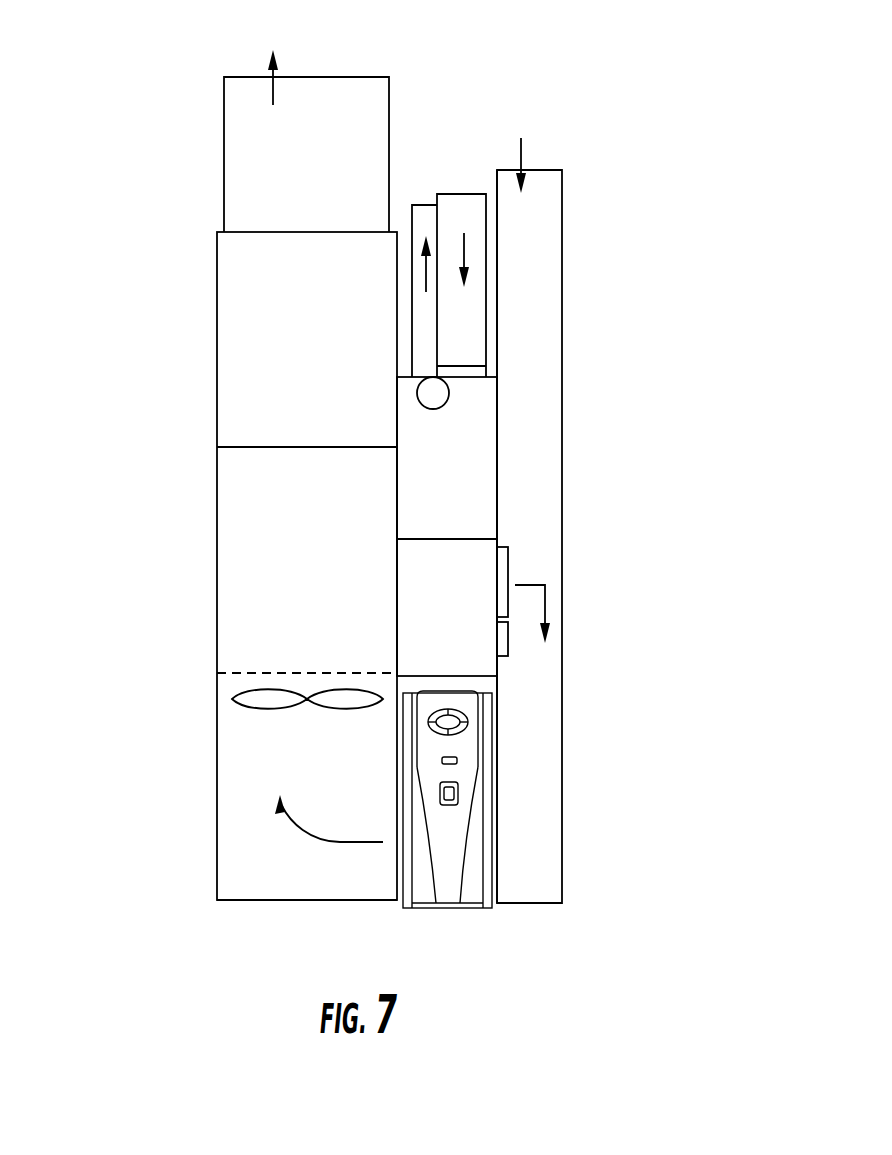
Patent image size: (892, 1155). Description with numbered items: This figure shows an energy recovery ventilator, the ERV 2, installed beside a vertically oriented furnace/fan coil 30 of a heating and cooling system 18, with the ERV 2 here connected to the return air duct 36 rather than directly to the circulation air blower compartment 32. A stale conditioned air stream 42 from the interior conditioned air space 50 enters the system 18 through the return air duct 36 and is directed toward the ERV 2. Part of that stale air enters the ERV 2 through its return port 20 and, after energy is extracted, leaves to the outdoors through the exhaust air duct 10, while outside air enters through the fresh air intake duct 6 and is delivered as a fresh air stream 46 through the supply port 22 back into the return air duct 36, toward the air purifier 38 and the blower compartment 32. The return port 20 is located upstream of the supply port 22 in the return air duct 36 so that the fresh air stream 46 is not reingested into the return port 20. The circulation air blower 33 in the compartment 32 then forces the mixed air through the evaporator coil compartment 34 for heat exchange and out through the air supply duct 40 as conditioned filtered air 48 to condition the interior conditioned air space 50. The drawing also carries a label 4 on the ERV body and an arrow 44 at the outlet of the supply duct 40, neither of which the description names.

The ERV 2 is at (537, 500).
The housing 4 is at (500, 458).
The fresh air intake duct 6 is at (470, 208).
The exhaust air duct 10 is at (428, 222).
The heating and cooling system 18 is at (198, 198).
The return port 20 is at (508, 638).
The supply port 22 is at (510, 569).
The furnace/fan coil 30 is at (200, 612).
The circulation air blower compartment 32 is at (230, 820).
The circulation air blower 33 is at (233, 700).
The evaporator coil compartment 34 is at (230, 363).
The return air duct 36 is at (545, 353).
The air purifier 38 is at (450, 885).
The air supply duct 40 is at (370, 152).
The stale conditioned air stream 42 is at (522, 152).
The supply air flow 44 is at (270, 68).
The fresh air stream 46 is at (545, 602).
The conditioned filtered air 48 is at (343, 842).
The interior conditioned air space 50 is at (440, 37).